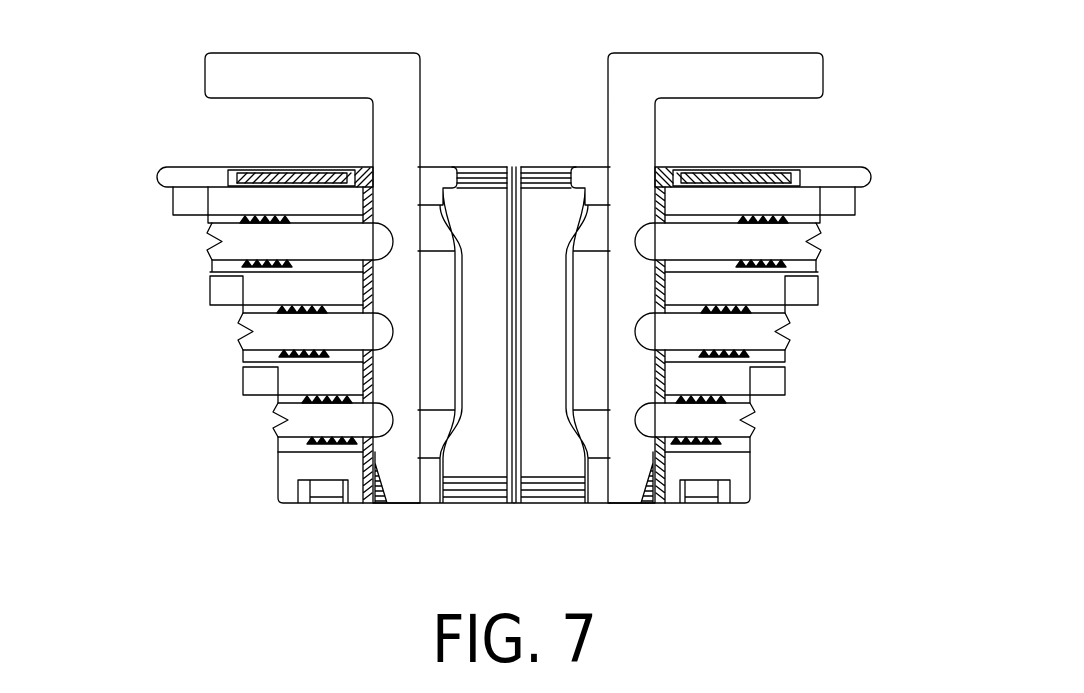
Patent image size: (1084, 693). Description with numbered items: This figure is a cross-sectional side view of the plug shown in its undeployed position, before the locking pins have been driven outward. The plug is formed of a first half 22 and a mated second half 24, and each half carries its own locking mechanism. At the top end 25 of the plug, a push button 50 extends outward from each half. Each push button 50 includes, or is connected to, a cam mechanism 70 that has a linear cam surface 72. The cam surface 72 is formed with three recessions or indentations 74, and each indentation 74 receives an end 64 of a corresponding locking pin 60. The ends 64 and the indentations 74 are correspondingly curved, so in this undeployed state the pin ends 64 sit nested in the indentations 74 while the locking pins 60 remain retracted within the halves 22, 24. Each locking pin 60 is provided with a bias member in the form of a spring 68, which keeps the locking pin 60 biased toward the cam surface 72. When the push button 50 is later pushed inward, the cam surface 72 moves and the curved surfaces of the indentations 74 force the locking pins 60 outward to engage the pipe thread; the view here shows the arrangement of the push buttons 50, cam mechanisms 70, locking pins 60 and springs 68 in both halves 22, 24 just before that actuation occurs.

The first half 22 is at (172, 175).
The second half 24 is at (843, 175).
The top end 25 is at (592, 167).
The push button 50 is at (800, 73).
The locking pin 60 is at (793, 247).
The end 64 is at (392, 437).
The spring 68 is at (267, 272).
The cam mechanism 70 is at (402, 123).
The cam surface 72 is at (370, 465).
The indentation 74 is at (390, 333).